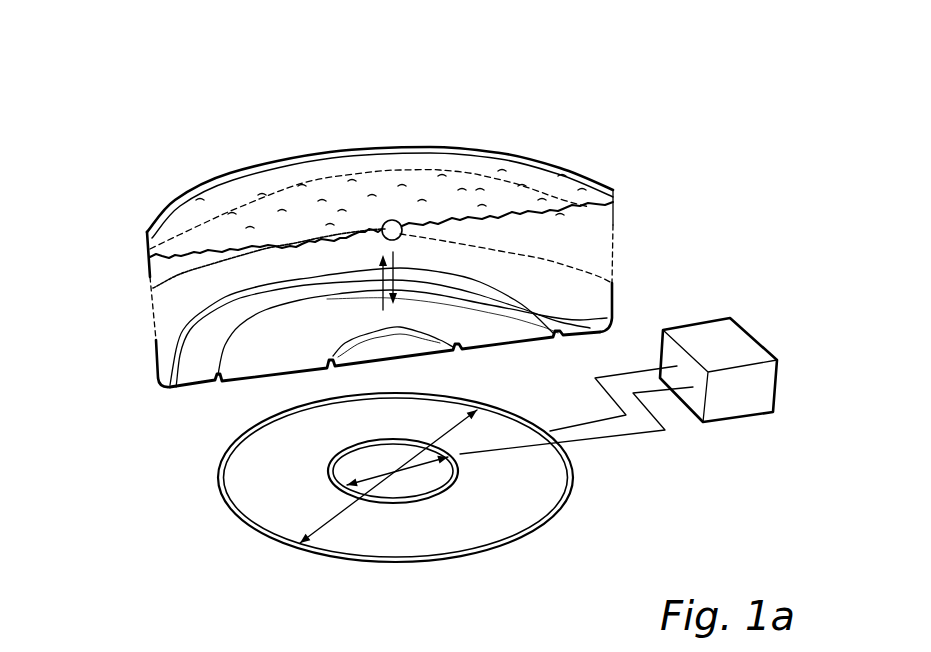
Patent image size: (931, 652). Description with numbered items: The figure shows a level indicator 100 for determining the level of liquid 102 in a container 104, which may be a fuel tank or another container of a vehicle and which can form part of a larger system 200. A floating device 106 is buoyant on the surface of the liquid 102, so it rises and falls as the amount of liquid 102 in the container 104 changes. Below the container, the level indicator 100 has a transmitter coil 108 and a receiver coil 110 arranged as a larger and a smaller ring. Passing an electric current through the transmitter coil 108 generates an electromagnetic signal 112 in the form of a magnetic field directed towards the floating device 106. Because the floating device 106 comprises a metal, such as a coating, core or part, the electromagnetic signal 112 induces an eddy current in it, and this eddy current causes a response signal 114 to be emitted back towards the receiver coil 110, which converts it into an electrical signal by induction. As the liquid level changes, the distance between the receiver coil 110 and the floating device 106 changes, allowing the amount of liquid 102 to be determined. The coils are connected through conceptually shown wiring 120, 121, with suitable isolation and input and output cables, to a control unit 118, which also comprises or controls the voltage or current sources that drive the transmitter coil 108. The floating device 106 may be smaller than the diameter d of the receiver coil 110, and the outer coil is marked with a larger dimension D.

The system 200 is at (624, 87).
The level indicator 100 is at (668, 216).
The liquid 102 is at (170, 270).
The container 104 is at (517, 343).
The floating device 106 is at (395, 221).
The transmitter coil 108 is at (563, 503).
The receiver coil 110 is at (450, 495).
The electromagnetic signal 112 is at (380, 300).
The response signal 114 is at (398, 261).
The control unit 118 is at (713, 337).
The wiring 120 is at (627, 370).
The wiring 121 is at (667, 397).
The disc diameter D is at (327, 520).
The diameter of the receiver coil d is at (363, 477).